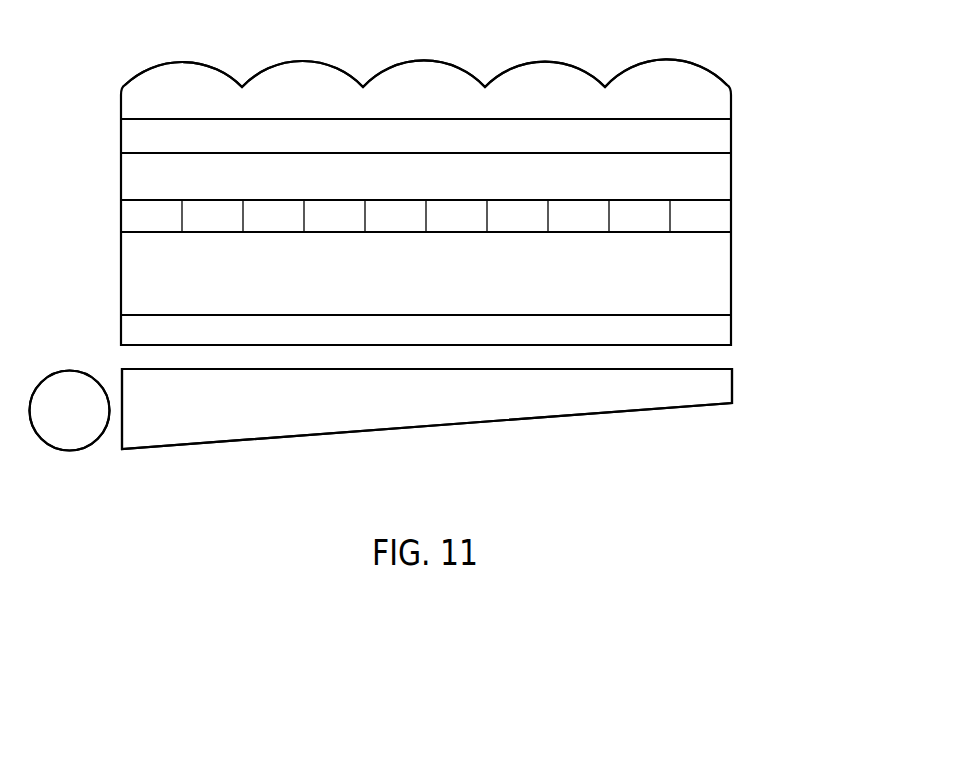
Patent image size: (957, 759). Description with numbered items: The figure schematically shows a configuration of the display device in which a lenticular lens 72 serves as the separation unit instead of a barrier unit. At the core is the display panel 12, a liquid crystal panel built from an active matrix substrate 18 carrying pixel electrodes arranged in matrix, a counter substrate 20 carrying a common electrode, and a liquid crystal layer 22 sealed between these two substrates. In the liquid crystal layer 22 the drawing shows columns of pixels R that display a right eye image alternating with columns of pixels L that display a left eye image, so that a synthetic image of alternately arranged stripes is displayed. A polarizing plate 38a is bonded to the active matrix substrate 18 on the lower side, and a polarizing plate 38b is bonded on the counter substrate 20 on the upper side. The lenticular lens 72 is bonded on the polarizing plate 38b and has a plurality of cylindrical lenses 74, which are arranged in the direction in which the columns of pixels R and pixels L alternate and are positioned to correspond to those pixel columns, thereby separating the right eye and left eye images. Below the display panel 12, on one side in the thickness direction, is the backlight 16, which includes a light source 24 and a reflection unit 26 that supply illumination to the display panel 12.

The lenticular lens 72 is at (126, 78).
The cylindrical lenses 74 is at (181, 73).
The polarizing plate 38b is at (712, 139).
The counter substrate 20 is at (707, 181).
The liquid crystal layer 22 is at (708, 216).
The active matrix substrate 18 is at (706, 250).
The polarizing plate 38a is at (703, 330).
The display panel 12 is at (773, 163).
The light source 24 is at (72, 436).
The reflection unit 26 is at (131, 430).
The backlight 16 is at (151, 494).